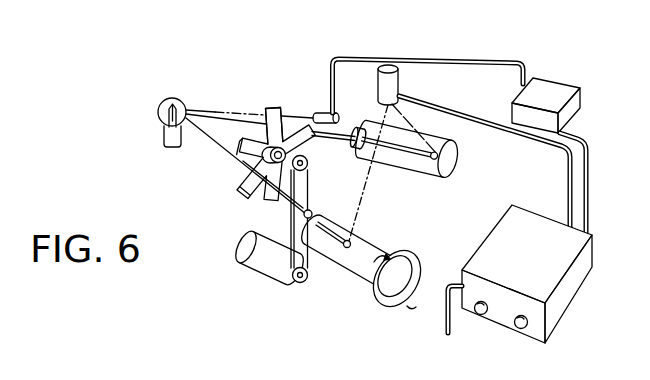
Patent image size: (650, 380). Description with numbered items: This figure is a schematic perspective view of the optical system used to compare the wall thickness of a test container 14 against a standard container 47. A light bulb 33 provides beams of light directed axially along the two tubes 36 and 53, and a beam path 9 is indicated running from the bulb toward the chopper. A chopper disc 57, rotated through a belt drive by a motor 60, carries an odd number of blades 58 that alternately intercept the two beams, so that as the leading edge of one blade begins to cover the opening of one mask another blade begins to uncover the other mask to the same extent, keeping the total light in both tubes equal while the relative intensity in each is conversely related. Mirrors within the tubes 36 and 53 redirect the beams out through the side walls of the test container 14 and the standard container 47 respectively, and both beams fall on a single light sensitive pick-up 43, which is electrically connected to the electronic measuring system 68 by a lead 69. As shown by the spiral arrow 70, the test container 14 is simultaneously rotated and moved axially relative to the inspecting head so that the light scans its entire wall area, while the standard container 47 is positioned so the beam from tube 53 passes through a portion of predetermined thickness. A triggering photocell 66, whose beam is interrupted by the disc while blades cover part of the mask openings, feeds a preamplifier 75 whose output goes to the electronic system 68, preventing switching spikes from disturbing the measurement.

The light beam 9 is at (210, 137).
The test container 14 is at (380, 238).
The light bulb 33 is at (178, 97).
The tube 36 is at (268, 200).
The light sensitive pick-up 43 is at (390, 67).
The standard container 47 is at (428, 170).
The tube 53 is at (345, 140).
The chopper disc 57 is at (278, 101).
The blade 58 is at (312, 112).
The motor 60 is at (262, 281).
The photocell 66 is at (329, 100).
The electronic measuring system 68 is at (536, 265).
The lead 69 is at (567, 182).
The spiral arrow 70 is at (390, 301).
The preamplifier 75 is at (559, 102).